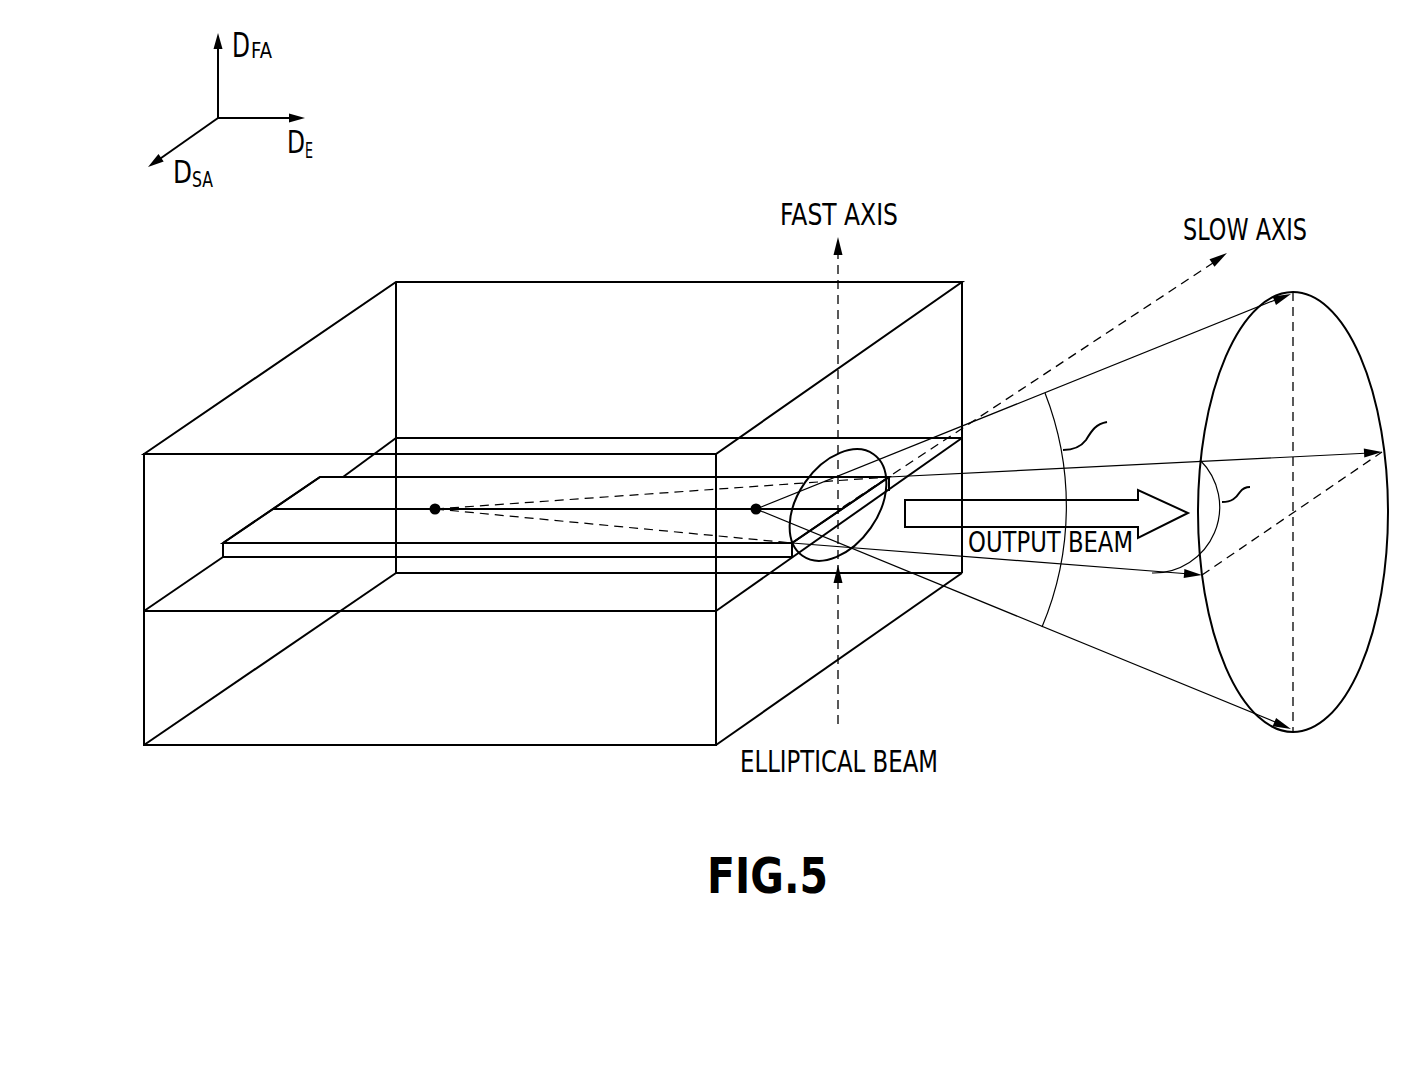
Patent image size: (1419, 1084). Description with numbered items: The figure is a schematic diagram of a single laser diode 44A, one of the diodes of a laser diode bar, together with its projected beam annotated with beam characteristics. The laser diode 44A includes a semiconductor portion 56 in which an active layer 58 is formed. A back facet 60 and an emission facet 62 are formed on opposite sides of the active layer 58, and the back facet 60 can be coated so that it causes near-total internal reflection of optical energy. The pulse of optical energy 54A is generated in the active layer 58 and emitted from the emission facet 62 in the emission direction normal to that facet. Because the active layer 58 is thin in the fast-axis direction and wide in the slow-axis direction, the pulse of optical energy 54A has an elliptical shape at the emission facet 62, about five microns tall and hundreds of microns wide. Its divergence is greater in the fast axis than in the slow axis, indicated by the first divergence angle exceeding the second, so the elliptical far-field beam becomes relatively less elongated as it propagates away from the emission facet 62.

The laser diode 44A is at (678, 200).
The semiconductor portion 56 is at (867, 610).
The active layer 58 is at (313, 558).
The back facet 60 is at (252, 508).
The emission facet 62 is at (895, 462).
The pulse of optical energy 54A is at (1032, 625).